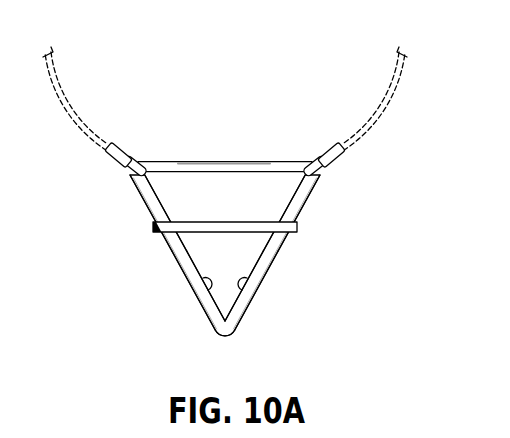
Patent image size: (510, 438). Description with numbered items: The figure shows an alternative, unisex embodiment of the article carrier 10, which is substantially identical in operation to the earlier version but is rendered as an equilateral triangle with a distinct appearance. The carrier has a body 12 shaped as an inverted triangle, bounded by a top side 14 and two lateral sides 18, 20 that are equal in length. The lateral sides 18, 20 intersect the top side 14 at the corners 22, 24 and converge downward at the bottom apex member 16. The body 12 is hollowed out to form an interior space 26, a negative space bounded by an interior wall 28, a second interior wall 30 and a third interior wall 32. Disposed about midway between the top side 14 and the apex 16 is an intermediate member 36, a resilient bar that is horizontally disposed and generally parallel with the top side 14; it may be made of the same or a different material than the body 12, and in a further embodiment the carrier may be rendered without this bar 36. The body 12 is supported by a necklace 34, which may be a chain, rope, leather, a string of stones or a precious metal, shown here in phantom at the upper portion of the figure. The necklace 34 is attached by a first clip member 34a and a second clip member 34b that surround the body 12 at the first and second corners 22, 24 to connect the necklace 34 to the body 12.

The article carrier 10 is at (234, 208).
The body 12 is at (286, 239).
The top side 14 is at (225, 169).
The bottom apex member 16 is at (225, 337).
The lateral side 18 is at (198, 302).
The lateral side 20 is at (252, 302).
The corner 22 is at (128, 174).
The corner 24 is at (322, 173).
The interior space 26 is at (201, 215).
The interior wall 28 is at (201, 279).
The interior wall 30 is at (249, 279).
The third interior wall 32 is at (206, 173).
The necklace 34 is at (369, 122).
The first clip member 34a is at (111, 156).
The second clip member 34b is at (338, 156).
The intermediate member 36 is at (258, 222).